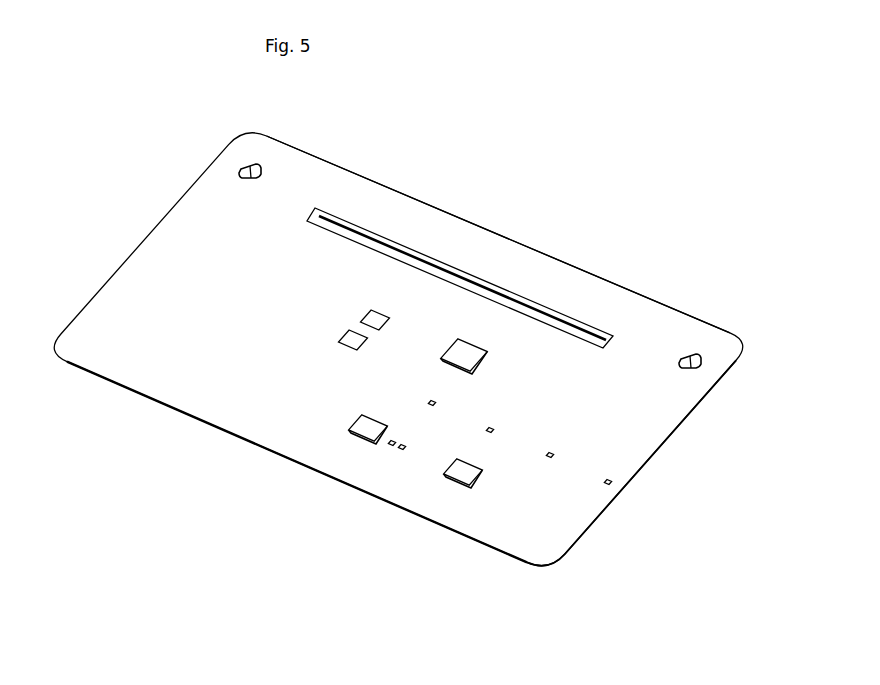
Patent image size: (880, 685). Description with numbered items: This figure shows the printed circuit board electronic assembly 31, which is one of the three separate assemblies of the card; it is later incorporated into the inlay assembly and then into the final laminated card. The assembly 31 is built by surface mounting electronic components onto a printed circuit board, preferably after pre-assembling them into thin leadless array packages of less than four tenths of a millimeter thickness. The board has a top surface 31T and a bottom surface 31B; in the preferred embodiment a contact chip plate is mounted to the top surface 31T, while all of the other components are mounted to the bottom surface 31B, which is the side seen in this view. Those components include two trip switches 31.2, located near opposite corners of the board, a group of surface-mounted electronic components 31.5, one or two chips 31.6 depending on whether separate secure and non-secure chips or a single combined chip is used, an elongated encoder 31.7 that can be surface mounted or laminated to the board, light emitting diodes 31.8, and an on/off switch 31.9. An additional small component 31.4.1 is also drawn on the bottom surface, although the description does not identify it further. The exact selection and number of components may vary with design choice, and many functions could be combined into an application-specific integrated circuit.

The printed circuit board electronic assembly 31 is at (165, 330).
The top surface 31T is at (305, 477).
The bottom surface 31B is at (465, 248).
The trip switch 31.2 is at (257, 167).
The component 31.4.1 is at (344, 345).
The electronic components 31.5 is at (488, 357).
The chip 31.6 is at (466, 486).
The encoder 31.7 is at (372, 237).
The LED 31.8 is at (612, 487).
The on/off switch 31.9 is at (371, 441).